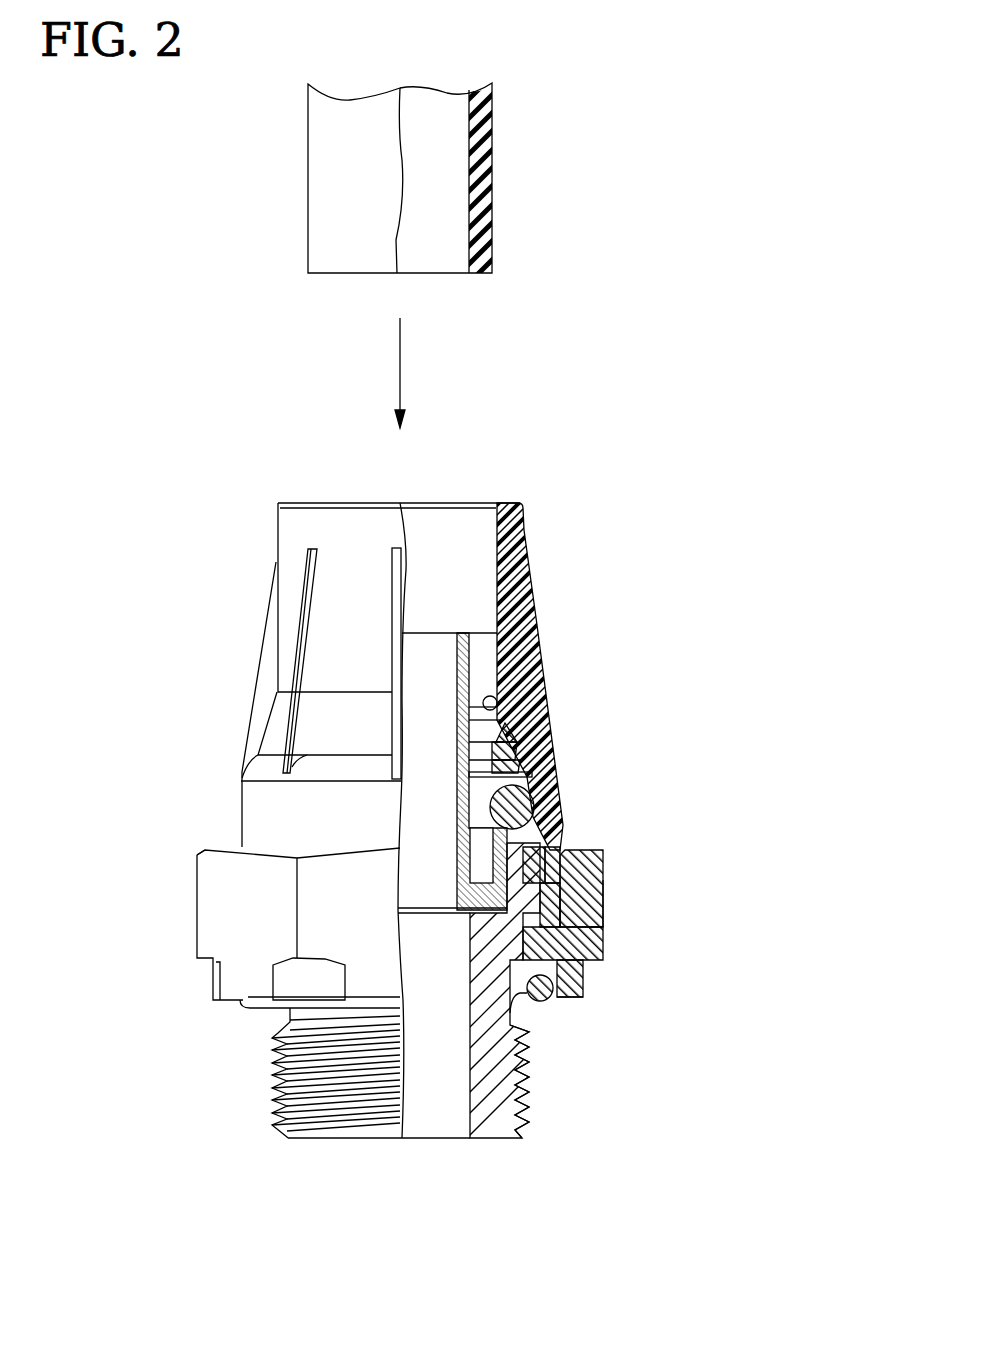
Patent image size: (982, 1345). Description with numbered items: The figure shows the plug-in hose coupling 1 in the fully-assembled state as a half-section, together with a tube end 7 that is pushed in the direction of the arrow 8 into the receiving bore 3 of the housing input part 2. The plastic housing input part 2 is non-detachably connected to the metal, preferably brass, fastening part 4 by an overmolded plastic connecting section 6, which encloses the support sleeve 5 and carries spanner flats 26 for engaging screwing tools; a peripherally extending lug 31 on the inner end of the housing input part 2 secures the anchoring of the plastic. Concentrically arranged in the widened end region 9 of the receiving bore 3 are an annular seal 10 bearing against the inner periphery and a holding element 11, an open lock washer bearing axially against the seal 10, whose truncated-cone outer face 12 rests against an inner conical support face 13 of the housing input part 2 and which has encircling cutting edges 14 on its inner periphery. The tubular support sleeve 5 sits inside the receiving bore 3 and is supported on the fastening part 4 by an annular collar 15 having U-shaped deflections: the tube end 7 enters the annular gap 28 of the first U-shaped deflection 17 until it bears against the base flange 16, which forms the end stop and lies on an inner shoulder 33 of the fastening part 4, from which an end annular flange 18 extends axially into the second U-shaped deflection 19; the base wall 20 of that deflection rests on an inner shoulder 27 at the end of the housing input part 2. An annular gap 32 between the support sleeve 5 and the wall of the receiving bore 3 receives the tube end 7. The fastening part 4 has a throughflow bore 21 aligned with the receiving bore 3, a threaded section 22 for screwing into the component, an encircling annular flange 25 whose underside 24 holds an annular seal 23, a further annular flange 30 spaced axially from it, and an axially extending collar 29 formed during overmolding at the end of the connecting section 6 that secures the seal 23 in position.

The plug-in hose coupling 1 is at (165, 588).
The housing input part 2 is at (300, 530).
The receiving bore 3 is at (460, 522).
The fastening part 4 is at (495, 1125).
The support sleeve 5 is at (478, 660).
The connecting section 6 is at (212, 932).
The tube end 7 is at (320, 187).
The plug-in direction arrow 8 is at (402, 373).
The widened end region 9 is at (535, 775).
The annular seal 10 is at (535, 805).
The holding element 11 is at (528, 735).
The outer face 12 is at (528, 758).
The inner conical support face 13 is at (505, 707).
The cutting edges 14 is at (520, 722).
The annular collar 15 is at (553, 862).
The base flange 16 is at (604, 912).
The first U-shaped deflection 17 is at (568, 897).
The end annular flange 18 is at (603, 878).
The second U-shaped deflection 19 is at (563, 840).
The base wall 20 is at (548, 828).
The throughflow bore 21 is at (442, 1127).
The threaded section 22 is at (275, 1082).
The annular seal 23 is at (548, 1008).
The underside 24 is at (553, 995).
The annular flange 25 is at (585, 968).
The spanner flats 26 is at (222, 908).
The inner shoulder 27 is at (482, 864).
The annular gap 28 is at (480, 833).
The collar 29 is at (585, 983).
The further annular flange 30 is at (585, 932).
The lug 31 is at (605, 893).
The annular gap 32 is at (467, 645).
The inner shoulder 33 is at (522, 1033).